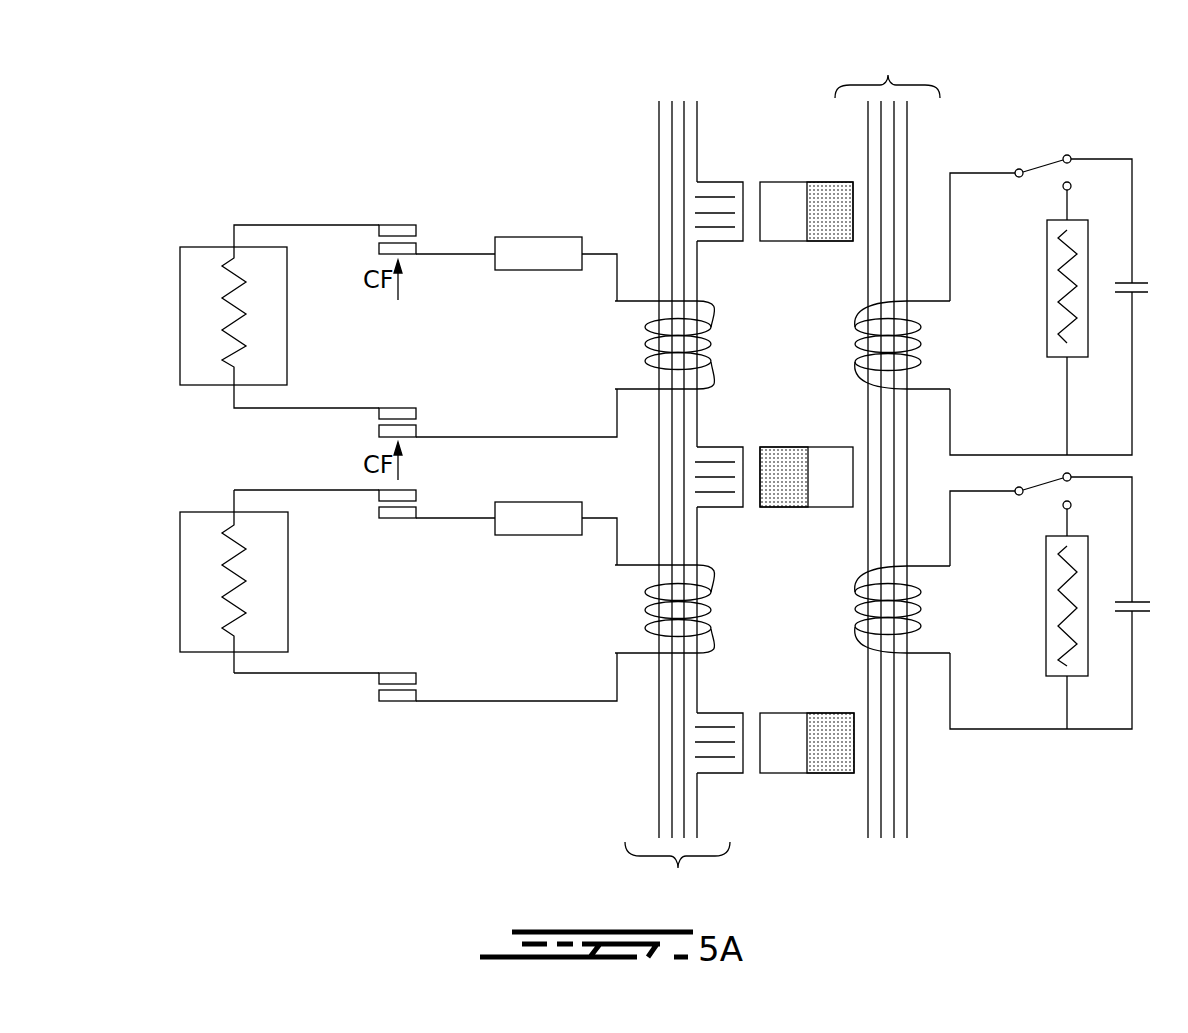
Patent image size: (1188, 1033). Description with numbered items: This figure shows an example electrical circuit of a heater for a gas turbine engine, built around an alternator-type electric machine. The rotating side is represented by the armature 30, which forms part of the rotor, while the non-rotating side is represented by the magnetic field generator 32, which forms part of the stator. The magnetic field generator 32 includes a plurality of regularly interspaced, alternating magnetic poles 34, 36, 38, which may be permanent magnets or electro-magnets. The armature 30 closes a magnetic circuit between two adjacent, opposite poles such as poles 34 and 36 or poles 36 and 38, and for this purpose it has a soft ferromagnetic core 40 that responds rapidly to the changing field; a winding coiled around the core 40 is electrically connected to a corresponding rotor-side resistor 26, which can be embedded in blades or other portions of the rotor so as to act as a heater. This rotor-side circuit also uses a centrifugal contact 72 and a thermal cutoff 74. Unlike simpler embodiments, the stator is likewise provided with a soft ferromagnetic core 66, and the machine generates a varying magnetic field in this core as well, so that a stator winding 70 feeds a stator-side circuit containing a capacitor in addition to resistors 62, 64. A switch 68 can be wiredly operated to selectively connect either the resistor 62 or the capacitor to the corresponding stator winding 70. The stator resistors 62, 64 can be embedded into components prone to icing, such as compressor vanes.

The resistor 26 is at (207, 321).
The armature 30 is at (677, 502).
The magnetic field generator 32 is at (887, 440).
The magnetic pole 34 is at (828, 242).
The magnetic pole 36 is at (786, 508).
The magnetic pole 38 is at (787, 713).
The soft ferromagnetic core 40 is at (697, 273).
The resistor 62 is at (1047, 285).
The resistor 64 is at (1046, 604).
The soft ferromagnetic core 66 is at (905, 363).
The switch 68 is at (1067, 155).
The stator winding 70 is at (920, 328).
The centrifugal contact 72 is at (405, 250).
The thermal cutoff 74 is at (533, 270).